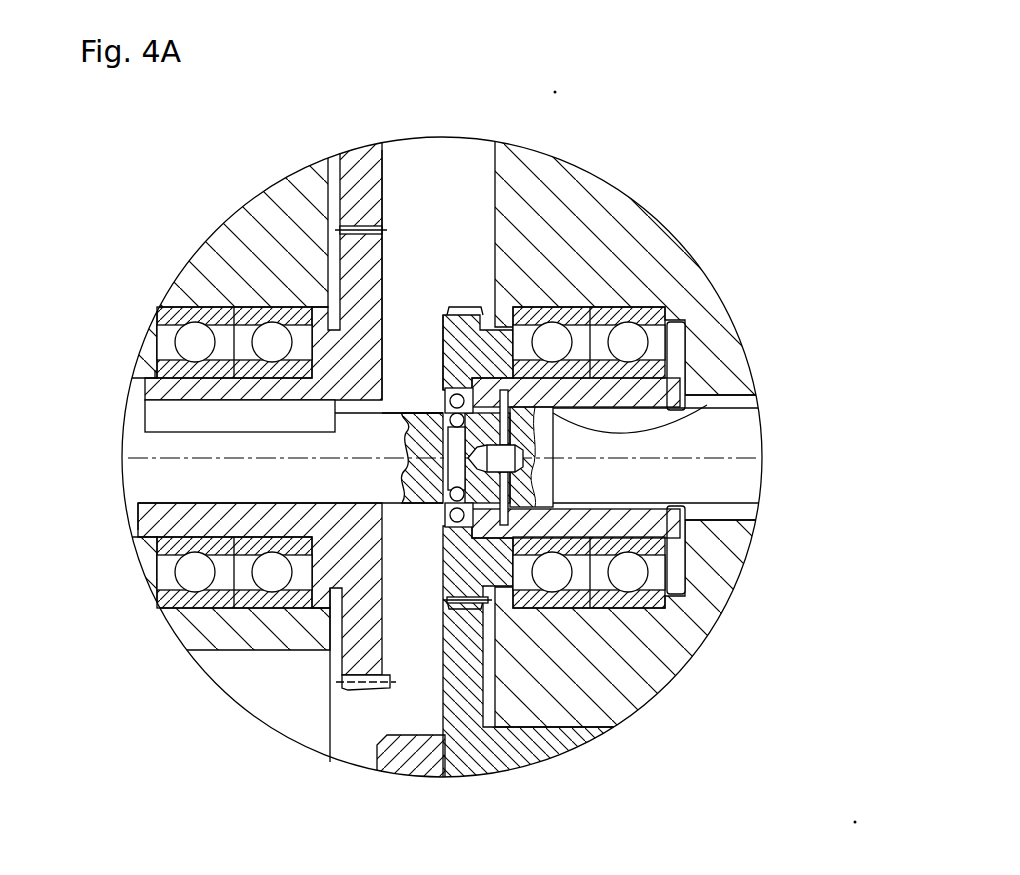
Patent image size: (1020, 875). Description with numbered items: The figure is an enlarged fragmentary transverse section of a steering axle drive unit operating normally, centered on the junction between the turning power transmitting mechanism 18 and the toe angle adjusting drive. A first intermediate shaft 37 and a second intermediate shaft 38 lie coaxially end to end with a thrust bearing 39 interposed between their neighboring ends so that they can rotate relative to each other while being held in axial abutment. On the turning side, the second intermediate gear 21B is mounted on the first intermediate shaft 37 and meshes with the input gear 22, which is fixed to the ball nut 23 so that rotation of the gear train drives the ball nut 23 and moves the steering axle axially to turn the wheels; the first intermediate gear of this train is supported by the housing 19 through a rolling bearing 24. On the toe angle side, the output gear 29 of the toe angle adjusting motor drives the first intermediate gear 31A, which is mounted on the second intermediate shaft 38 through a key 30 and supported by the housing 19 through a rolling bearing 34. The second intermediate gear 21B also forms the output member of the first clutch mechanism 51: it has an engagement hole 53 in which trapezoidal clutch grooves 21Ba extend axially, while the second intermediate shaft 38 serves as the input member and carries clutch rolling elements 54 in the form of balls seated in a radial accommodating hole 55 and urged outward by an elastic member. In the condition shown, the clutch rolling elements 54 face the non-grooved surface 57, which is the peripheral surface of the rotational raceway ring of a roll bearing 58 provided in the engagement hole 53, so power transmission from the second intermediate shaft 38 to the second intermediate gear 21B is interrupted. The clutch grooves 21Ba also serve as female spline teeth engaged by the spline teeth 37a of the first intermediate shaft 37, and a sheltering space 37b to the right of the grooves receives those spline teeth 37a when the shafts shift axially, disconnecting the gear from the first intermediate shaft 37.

The turning power transmitting mechanism 18 is at (474, 152).
The housing 19 is at (582, 210).
The second intermediate gear 21B is at (465, 370).
The clutch grooves 21Ba is at (553, 478).
The input gear 22 is at (440, 700).
The ball nut 23 is at (410, 765).
The rolling bearing 24 is at (620, 288).
The output gear 29 is at (360, 167).
The key 30 is at (162, 412).
The first intermediate gear 31A is at (403, 240).
The rolling bearing 34 is at (250, 306).
The first intermediate shaft 37 is at (732, 445).
The spline teeth 37a is at (665, 447).
The sheltering space 37b is at (707, 405).
The second intermediate shaft 38 is at (142, 483).
The thrust bearing 39 is at (423, 345).
The first clutch mechanism 51 is at (414, 330).
The engagement hole 53 is at (455, 442).
The clutch rolling elements 54 is at (447, 413).
The radial accommodating hole 55 is at (455, 466).
The non-grooved surface 57 is at (455, 494).
The roll bearing 58 is at (457, 527).